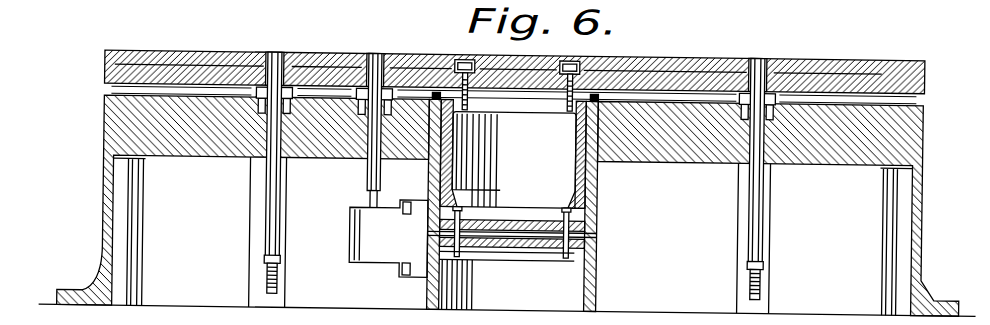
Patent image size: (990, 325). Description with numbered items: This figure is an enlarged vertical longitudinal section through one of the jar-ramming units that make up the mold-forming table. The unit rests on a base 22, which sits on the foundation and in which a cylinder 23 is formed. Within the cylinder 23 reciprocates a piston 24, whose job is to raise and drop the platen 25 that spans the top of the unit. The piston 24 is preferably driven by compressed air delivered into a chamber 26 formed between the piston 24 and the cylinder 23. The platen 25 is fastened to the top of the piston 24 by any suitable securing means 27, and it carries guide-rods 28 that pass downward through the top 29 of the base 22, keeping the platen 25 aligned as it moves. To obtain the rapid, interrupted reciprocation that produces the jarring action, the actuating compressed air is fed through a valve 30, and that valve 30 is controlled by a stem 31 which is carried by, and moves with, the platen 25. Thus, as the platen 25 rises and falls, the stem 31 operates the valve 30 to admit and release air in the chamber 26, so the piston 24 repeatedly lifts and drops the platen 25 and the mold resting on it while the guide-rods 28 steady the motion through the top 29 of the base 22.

The base 22 is at (66, 307).
The cylinder 23 is at (598, 270).
The piston 24 is at (575, 142).
The platen 25 is at (612, 67).
The chamber 26 is at (595, 232).
The securing means 27 is at (465, 100).
The guide-rods 28 is at (266, 180).
The top of the base 29 is at (132, 128).
The valve 30 is at (388, 238).
The stem 31 is at (366, 172).